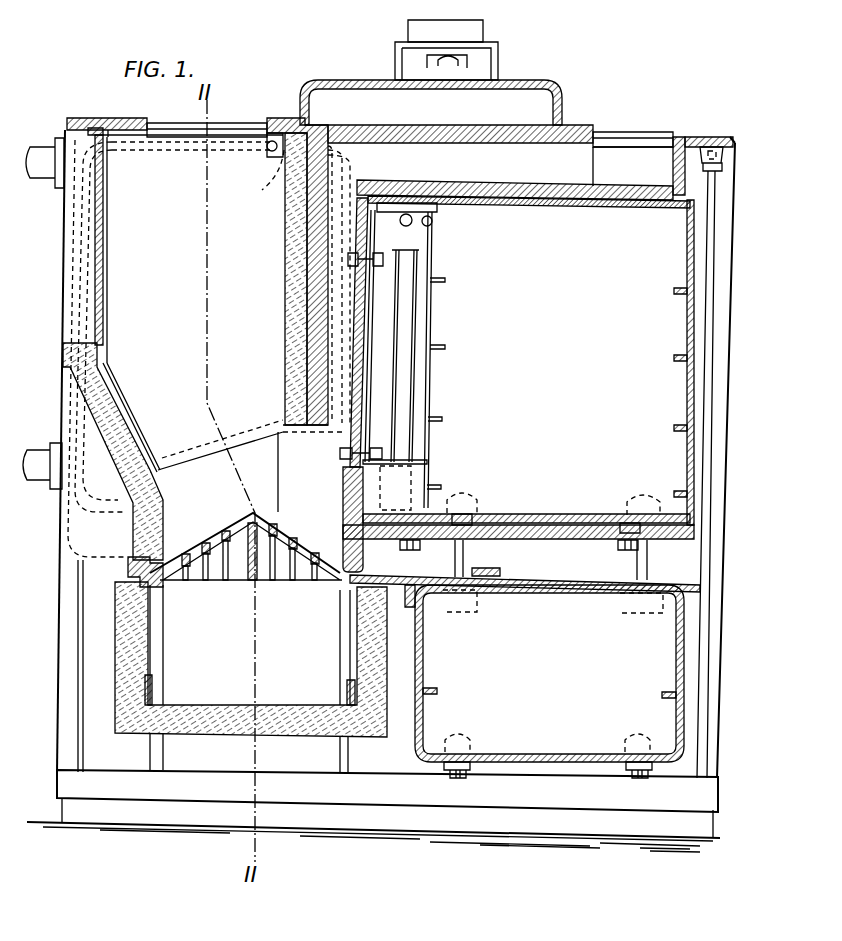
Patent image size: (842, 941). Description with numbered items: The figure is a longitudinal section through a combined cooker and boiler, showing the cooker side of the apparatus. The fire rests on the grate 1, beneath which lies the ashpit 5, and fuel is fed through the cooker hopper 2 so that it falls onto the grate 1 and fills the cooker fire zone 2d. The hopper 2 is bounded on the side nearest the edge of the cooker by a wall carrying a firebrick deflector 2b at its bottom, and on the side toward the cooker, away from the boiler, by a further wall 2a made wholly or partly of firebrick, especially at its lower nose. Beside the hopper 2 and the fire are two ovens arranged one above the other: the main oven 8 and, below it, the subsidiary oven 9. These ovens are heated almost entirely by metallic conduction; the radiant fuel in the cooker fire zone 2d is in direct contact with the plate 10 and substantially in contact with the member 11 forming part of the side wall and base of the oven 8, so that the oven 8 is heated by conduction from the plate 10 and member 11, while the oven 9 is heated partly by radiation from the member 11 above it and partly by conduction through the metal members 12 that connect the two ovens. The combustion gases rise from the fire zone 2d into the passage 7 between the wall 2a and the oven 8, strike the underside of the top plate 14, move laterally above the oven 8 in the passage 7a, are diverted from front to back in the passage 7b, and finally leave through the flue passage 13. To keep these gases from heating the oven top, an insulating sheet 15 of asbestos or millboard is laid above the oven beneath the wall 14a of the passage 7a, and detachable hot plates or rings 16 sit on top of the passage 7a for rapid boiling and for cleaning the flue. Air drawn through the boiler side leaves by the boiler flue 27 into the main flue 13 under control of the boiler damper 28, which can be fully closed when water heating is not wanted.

The grate 1 is at (230, 528).
The cooker hopper 2 is at (175, 343).
The hopper wall 2a is at (297, 385).
The firebrick deflector 2b is at (110, 406).
The cooker fire zone 2d is at (237, 466).
The ashpit 5 is at (251, 677).
The passage 7 is at (333, 300).
The passage 7a is at (576, 166).
The passage 7b is at (633, 166).
The main oven 8 is at (518, 368).
The subsidiary oven 9 is at (549, 681).
The plate 10 is at (350, 432).
The member 11 is at (357, 527).
The metal members 12 is at (645, 575).
The flue passage 13 is at (480, 28).
The top plate 14 is at (458, 143).
The wall of the passage 14a is at (494, 198).
The insulating sheet 15 is at (579, 208).
The hot plates or rings 16 is at (634, 138).
The boiler flue 27 is at (290, 178).
The boiler damper 28 is at (262, 172).